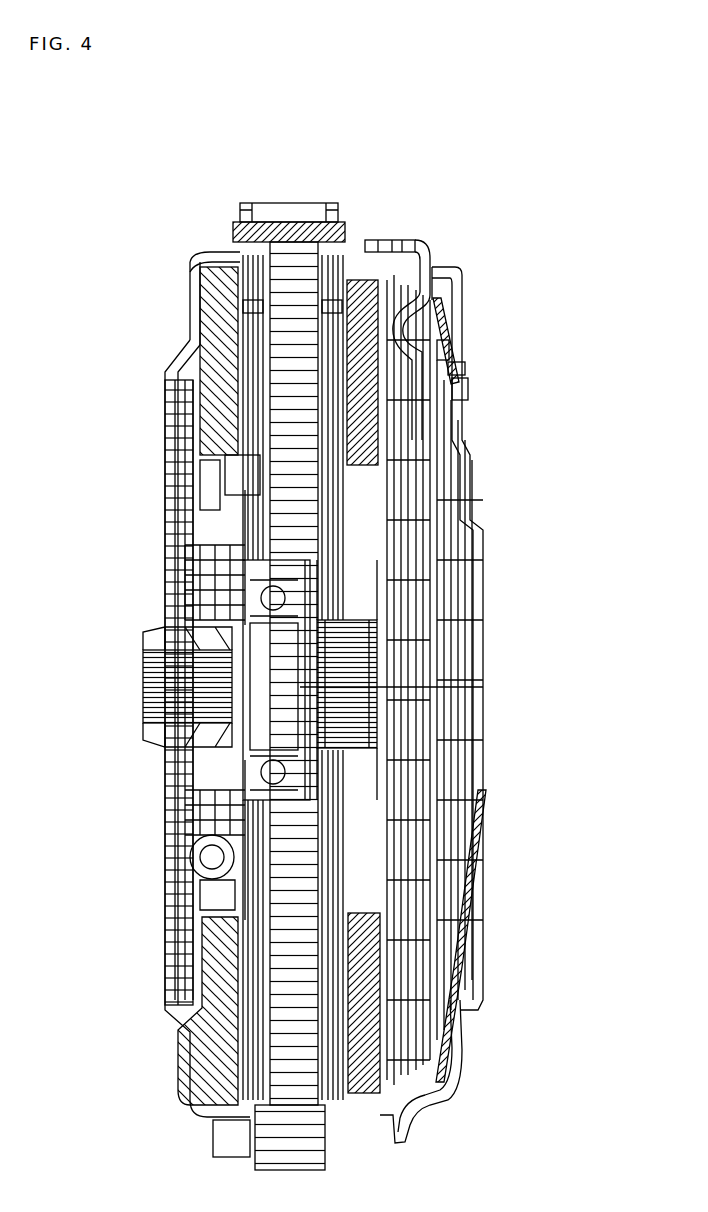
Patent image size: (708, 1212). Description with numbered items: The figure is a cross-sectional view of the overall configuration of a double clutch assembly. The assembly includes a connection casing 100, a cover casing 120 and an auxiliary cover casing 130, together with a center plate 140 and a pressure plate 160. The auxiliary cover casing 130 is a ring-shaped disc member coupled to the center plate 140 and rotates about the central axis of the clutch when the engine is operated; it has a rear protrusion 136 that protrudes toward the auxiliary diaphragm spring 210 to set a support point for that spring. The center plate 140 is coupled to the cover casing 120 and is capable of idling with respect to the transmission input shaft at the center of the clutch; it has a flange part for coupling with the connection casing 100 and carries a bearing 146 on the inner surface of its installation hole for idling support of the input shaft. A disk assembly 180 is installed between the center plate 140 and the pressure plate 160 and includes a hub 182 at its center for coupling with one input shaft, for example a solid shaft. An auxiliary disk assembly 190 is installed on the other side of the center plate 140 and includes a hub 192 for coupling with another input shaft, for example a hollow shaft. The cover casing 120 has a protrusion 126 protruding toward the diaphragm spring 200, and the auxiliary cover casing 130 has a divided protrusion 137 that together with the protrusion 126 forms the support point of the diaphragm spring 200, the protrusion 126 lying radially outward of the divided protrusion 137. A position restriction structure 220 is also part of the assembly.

The connection casing 100 is at (195, 272).
The cover casing 120 is at (413, 243).
The protrusion 126 is at (448, 1070).
The auxiliary cover casing 130 is at (400, 278).
The rear protrusion 136 is at (398, 327).
The divided protrusion 137 is at (445, 1008).
The center plate 140 is at (300, 245).
The bearing 146 is at (240, 598).
The pressure plate 160 is at (215, 370).
The disk assembly 180 is at (240, 340).
The hub 182 is at (155, 632).
The auxiliary disk assembly 190 is at (445, 478).
The hub 192 is at (420, 598).
The diaphragm spring 200 is at (465, 343).
The auxiliary diaphragm spring 210 is at (462, 372).
The position restriction structure 220 is at (462, 390).